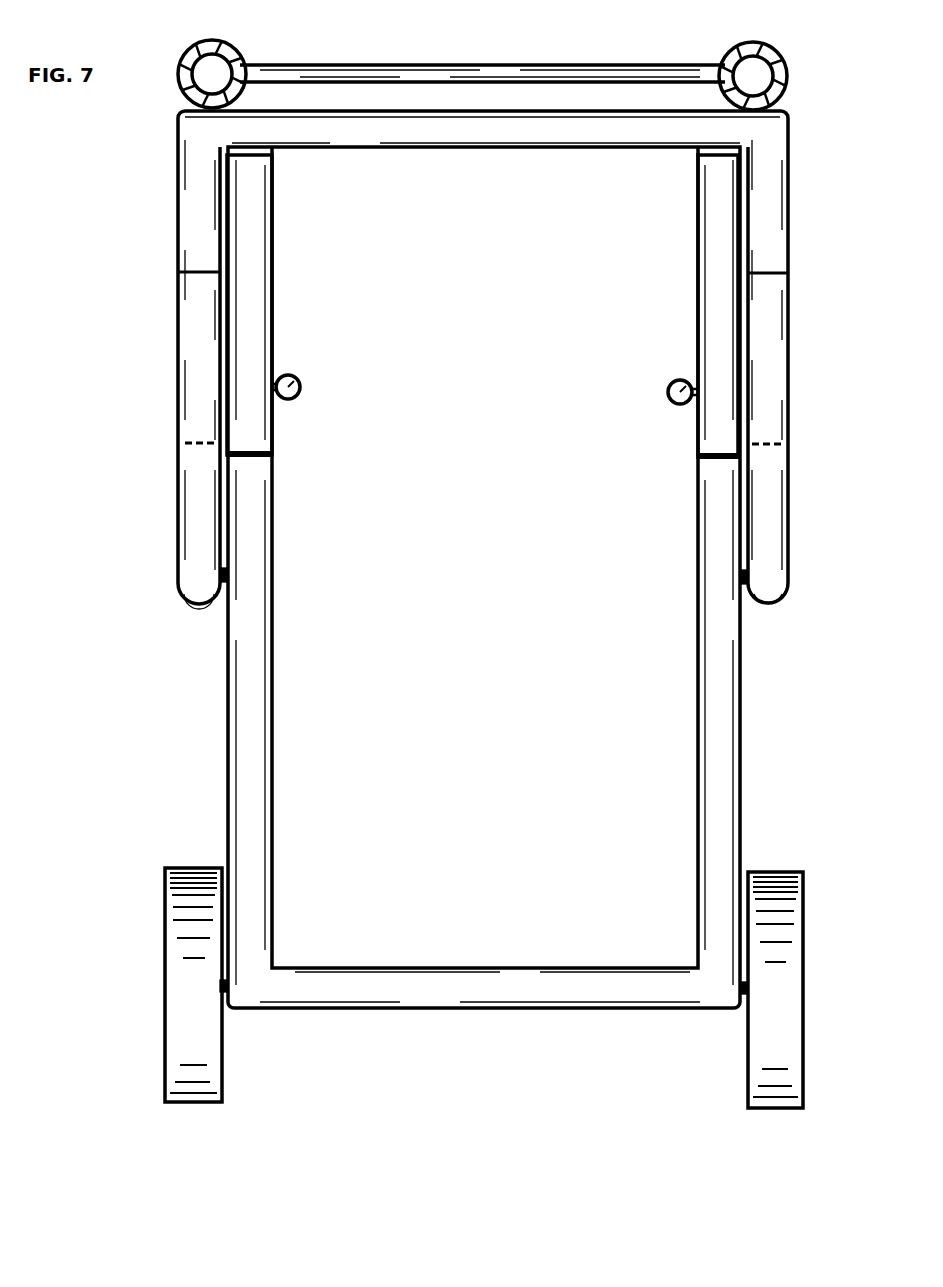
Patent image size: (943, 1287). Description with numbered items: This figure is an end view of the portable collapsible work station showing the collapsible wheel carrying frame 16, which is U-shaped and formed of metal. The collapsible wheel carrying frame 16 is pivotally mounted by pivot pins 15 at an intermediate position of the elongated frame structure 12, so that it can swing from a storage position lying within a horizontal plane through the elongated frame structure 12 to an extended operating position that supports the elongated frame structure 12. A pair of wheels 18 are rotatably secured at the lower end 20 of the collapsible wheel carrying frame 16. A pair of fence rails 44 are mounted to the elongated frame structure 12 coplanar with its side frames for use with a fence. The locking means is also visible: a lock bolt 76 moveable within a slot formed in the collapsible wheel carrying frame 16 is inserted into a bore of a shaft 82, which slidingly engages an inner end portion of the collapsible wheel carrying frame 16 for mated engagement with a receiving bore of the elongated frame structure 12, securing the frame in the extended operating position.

The elongated frame structure 12 is at (768, 330).
The pivot pins 15 is at (224, 576).
The collapsible wheel carrying frame 16 is at (250, 725).
The wheels 18 is at (178, 1015).
The lower end 20 is at (250, 812).
The fence rails 44 is at (205, 80).
The lock bolt 76 is at (296, 378).
The shaft 82 is at (274, 458).